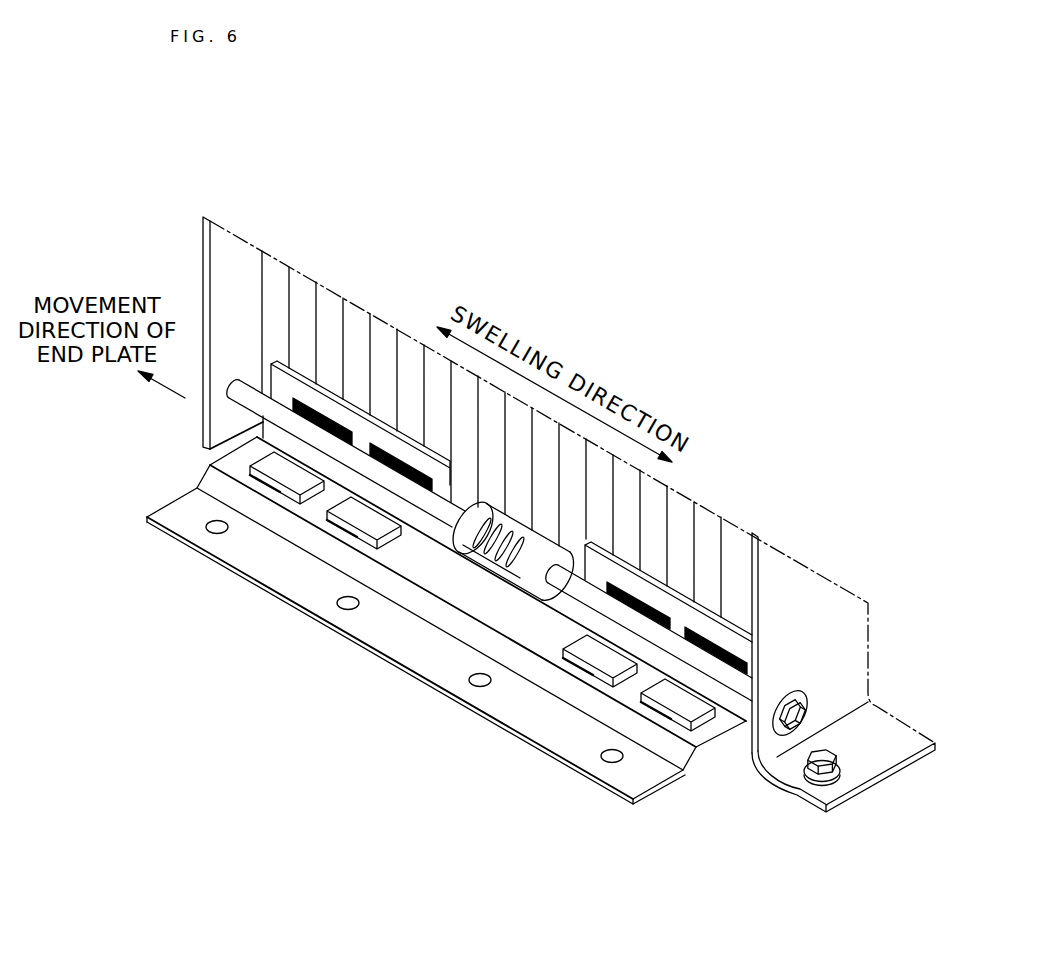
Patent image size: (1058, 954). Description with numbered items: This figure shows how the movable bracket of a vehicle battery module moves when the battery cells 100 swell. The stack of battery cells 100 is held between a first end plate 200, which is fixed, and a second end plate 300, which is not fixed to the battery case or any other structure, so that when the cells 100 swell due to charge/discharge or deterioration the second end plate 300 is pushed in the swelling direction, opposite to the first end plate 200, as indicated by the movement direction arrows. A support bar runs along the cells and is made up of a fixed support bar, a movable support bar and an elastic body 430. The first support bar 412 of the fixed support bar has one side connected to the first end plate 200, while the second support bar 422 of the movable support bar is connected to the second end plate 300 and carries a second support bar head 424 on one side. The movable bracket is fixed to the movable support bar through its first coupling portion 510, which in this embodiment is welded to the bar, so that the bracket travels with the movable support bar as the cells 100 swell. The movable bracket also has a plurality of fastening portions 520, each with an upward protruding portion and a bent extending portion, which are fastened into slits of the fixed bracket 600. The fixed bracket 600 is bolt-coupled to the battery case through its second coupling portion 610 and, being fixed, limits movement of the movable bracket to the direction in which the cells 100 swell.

The battery cell 100 is at (296, 292).
The first end plate 200 is at (812, 598).
The second end plate 300 is at (222, 275).
The first support bar 412 is at (587, 590).
The second support bar 422 is at (332, 446).
The second support bar head 424 is at (483, 513).
The elastic body 430 is at (487, 563).
The first coupling portion 510 is at (311, 414).
The fastening portion 520 is at (680, 697).
The fixed bracket 600 is at (272, 566).
The second coupling portion 610 is at (605, 753).